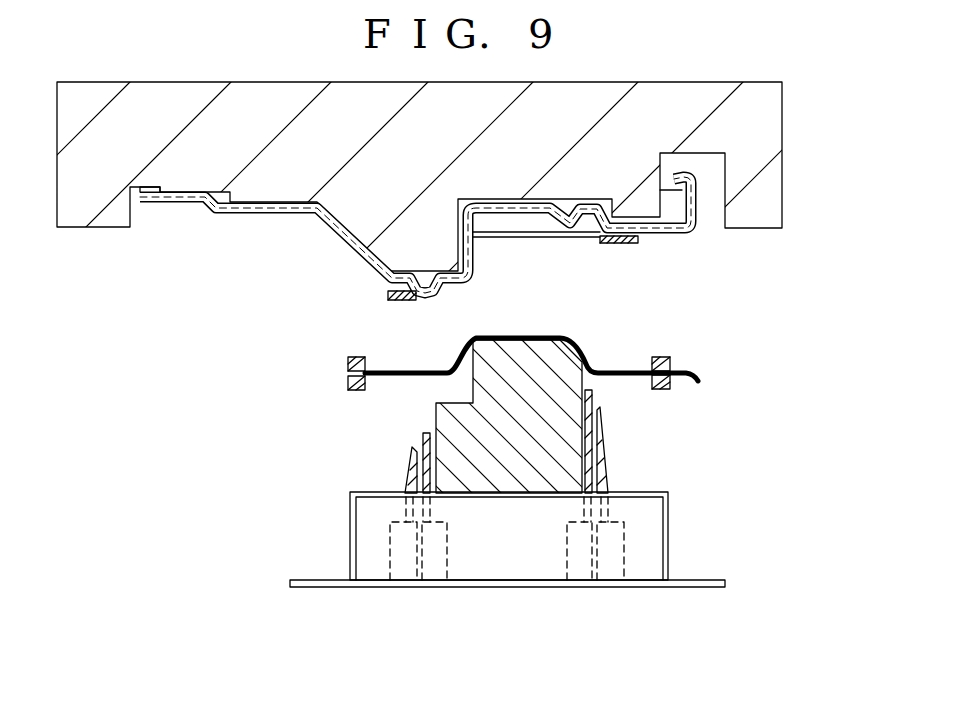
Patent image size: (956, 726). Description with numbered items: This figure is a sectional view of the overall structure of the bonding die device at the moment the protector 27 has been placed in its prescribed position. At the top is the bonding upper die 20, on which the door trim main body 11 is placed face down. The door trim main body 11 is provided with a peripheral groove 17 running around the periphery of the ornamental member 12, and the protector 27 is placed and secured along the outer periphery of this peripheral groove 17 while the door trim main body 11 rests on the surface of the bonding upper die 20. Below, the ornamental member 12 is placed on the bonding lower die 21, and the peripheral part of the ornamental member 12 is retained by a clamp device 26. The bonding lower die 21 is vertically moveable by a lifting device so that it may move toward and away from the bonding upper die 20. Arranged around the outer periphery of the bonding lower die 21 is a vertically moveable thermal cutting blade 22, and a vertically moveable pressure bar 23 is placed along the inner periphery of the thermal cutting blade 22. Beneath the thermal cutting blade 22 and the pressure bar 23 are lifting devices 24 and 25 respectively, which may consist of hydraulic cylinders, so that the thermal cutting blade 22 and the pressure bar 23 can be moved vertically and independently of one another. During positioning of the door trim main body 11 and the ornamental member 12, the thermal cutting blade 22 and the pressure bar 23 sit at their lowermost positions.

The bonding upper die 20 is at (750, 127).
The door trim main body 11 is at (258, 221).
The ornamental member 12 is at (597, 365).
The peripheral groove 17 is at (425, 288).
The protector 27 is at (392, 299).
The bonding lower die 21 is at (518, 458).
The thermal cutting blade 22 is at (404, 472).
The pressure bar 23 is at (423, 433).
The lifting device 24 is at (401, 586).
The lifting device 25 is at (436, 586).
The clamp device 26 is at (347, 362).